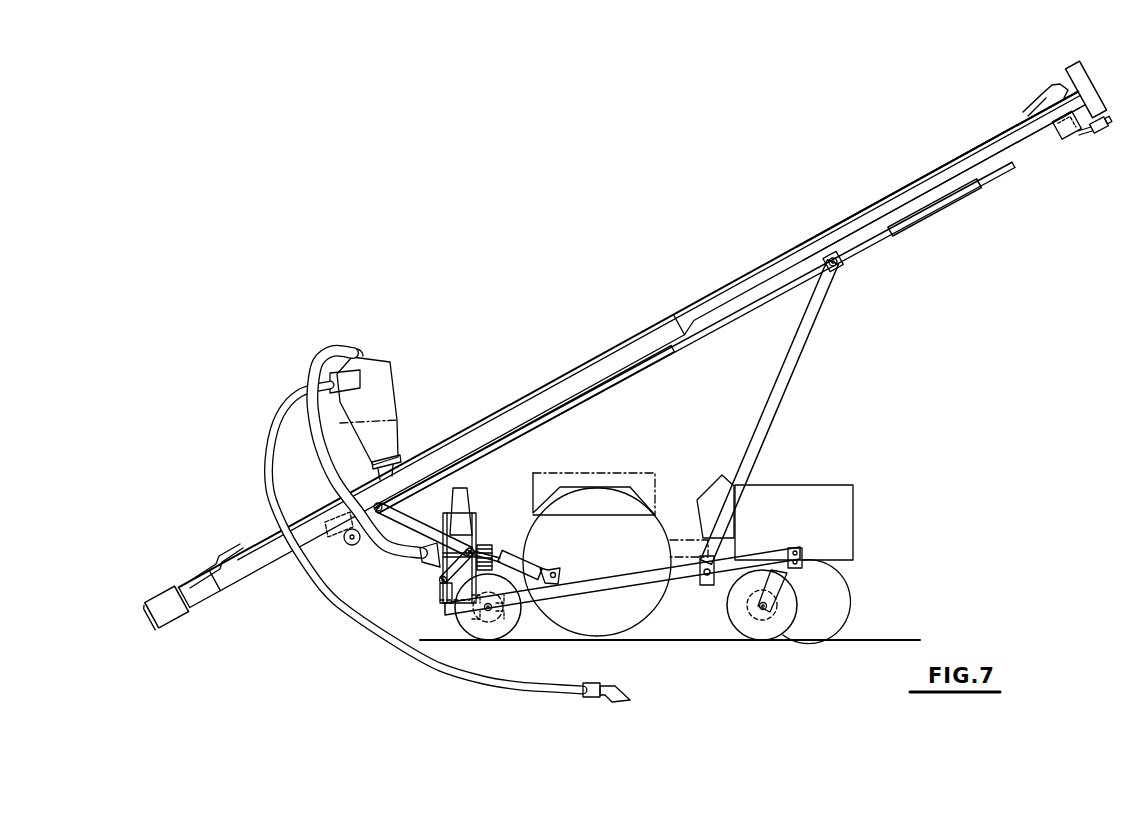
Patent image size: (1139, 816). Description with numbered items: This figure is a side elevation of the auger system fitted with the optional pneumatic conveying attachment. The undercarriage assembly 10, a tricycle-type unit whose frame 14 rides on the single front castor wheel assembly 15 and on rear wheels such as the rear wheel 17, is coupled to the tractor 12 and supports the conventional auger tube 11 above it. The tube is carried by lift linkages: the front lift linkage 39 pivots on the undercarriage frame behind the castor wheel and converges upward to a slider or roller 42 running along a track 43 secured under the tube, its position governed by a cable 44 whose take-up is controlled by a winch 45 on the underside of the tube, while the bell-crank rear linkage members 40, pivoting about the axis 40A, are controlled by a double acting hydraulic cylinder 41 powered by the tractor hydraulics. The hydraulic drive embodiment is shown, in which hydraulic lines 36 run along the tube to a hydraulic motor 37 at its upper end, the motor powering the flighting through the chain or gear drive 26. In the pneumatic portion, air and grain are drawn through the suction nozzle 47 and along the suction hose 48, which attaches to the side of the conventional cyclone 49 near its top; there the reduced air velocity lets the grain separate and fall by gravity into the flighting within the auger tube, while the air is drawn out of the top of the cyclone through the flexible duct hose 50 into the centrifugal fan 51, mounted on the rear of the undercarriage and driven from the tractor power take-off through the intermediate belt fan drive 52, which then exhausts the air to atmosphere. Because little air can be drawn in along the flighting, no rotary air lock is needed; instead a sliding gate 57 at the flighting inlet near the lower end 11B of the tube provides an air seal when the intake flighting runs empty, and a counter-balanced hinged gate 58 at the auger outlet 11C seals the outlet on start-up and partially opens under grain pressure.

The undercarriage assembly 10 is at (635, 592).
The auger tube 11 is at (627, 340).
The lower end of boom 11B is at (200, 600).
The auger outlet 11C is at (1060, 133).
The tractor 12 is at (815, 497).
The frame 14 is at (580, 578).
The front castor wheel assembly 15 is at (735, 620).
The rear wheel 17 is at (468, 614).
The chain or gear drive 26 is at (1082, 72).
The hydraulic lines 36 is at (957, 152).
The hydraulic motor 37 is at (1050, 85).
The front lift linkage 39 is at (790, 387).
The rear linkage members 40 is at (408, 528).
The pivot axis 40A is at (440, 578).
The double acting hydraulic cylinder 41 is at (527, 560).
The slider or roller 42 is at (840, 264).
The track 43 is at (935, 202).
The cable 44 is at (610, 406).
The winch 45 is at (348, 545).
The suction nozzle 47 is at (628, 692).
The suction hose 48 is at (266, 452).
The cyclone 49 is at (396, 400).
The duct hose 50 is at (327, 472).
The centrifugal fan 51 is at (482, 520).
The fan drive 52 is at (486, 548).
The sliding gate 57 is at (183, 592).
The counter-balanced hinged gate 58 is at (1095, 134).